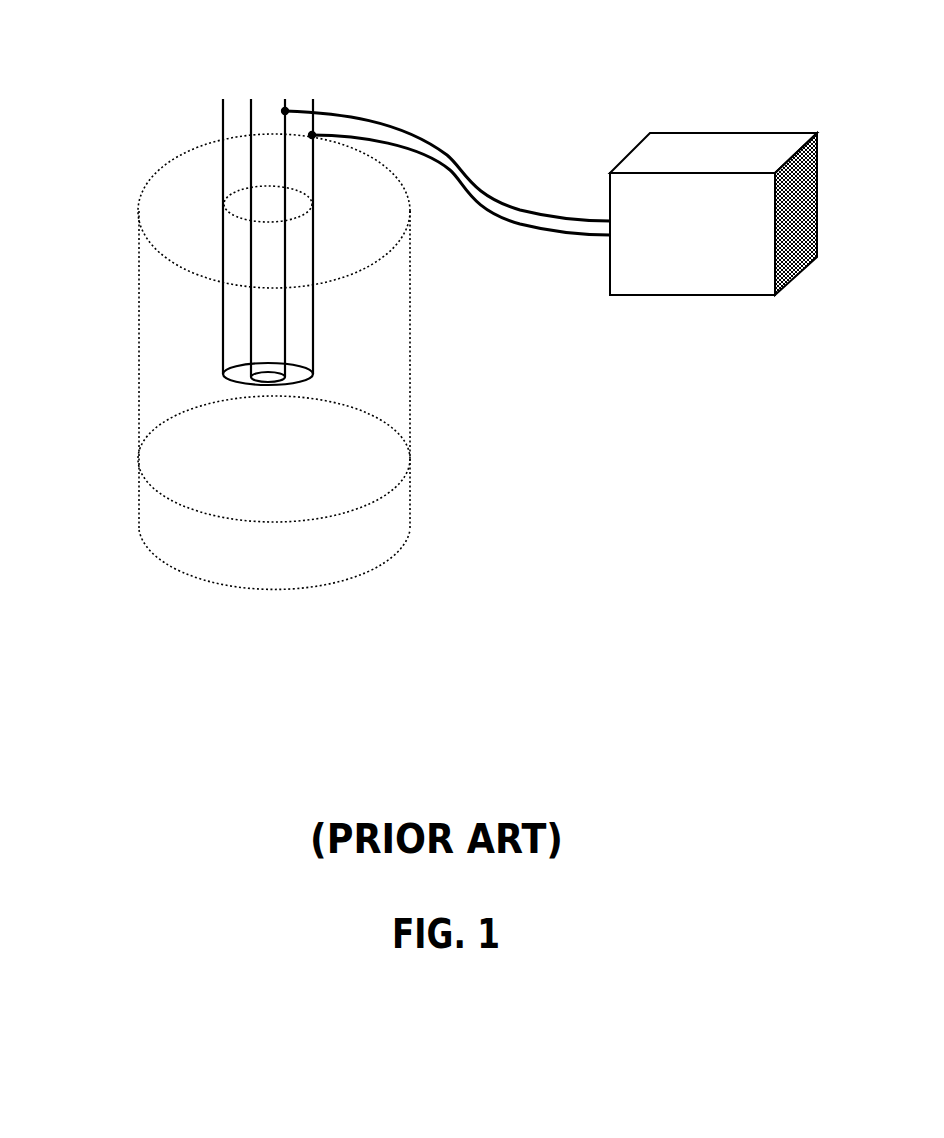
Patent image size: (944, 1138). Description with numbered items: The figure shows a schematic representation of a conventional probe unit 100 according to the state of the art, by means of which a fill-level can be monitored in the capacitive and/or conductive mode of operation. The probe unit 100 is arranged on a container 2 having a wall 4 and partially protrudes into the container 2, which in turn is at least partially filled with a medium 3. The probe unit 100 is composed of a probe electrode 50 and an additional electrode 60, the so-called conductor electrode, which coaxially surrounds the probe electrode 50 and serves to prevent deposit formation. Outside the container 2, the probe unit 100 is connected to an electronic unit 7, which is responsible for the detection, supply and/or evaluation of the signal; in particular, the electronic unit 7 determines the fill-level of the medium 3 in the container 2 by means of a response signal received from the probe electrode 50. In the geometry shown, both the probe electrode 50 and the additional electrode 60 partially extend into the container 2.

The probe unit 100 is at (191, 94).
The container 2 is at (136, 282).
The wall 4 is at (138, 212).
The medium 3 is at (146, 498).
The probe electrode 50 is at (268, 263).
The additional electrode 60 is at (320, 325).
The electronic unit 7 is at (742, 265).